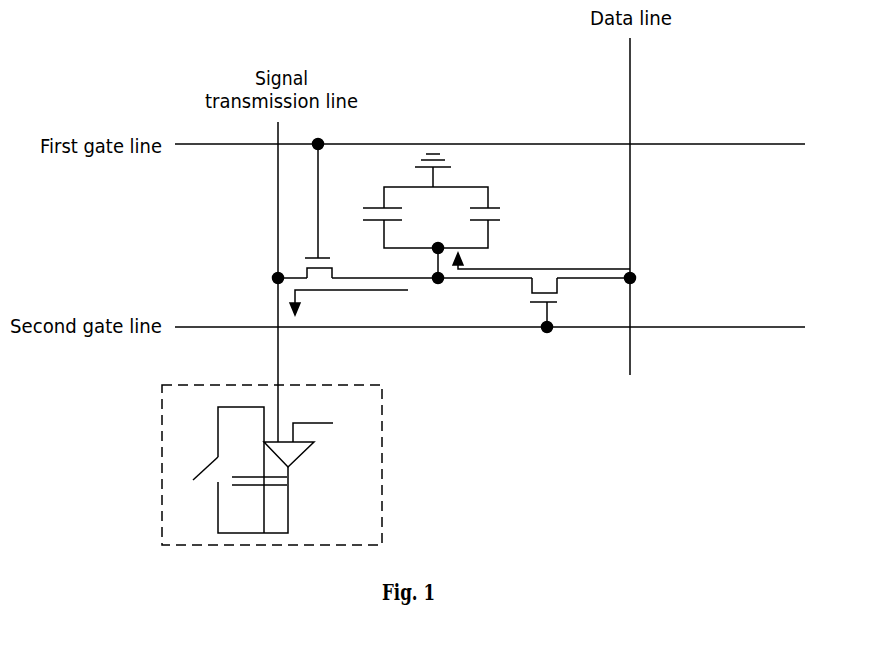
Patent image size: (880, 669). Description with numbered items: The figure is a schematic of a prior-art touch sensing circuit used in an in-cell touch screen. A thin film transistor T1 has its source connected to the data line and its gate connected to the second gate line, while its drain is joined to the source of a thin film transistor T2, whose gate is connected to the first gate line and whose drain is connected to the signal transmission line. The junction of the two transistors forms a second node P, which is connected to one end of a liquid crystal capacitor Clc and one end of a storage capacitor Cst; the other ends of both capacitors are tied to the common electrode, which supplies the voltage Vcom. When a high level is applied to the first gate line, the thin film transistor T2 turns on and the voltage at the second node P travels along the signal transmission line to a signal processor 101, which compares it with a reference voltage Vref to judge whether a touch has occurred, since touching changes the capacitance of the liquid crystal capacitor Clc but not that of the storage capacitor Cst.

The signal processor 101 is at (303, 456).
The thin film transistor T1 is at (562, 305).
The thin film transistor T2 is at (338, 209).
The liquid crystal capacitor Clc is at (368, 198).
The storage capacitor Cst is at (506, 206).
The common electrode voltage Vcom is at (468, 170).
The second node P is at (436, 295).
The reference voltage Vref is at (334, 428).